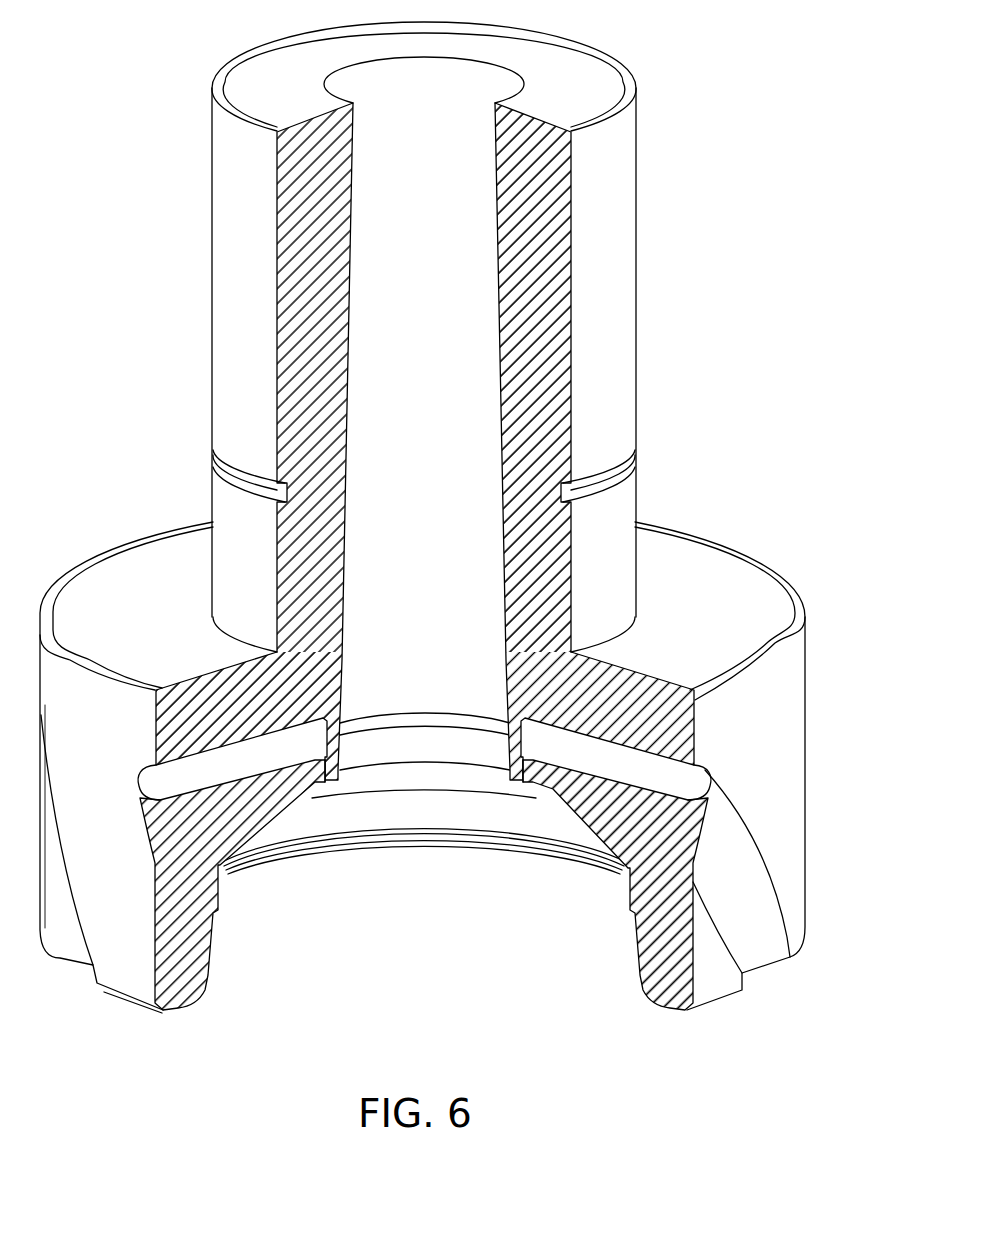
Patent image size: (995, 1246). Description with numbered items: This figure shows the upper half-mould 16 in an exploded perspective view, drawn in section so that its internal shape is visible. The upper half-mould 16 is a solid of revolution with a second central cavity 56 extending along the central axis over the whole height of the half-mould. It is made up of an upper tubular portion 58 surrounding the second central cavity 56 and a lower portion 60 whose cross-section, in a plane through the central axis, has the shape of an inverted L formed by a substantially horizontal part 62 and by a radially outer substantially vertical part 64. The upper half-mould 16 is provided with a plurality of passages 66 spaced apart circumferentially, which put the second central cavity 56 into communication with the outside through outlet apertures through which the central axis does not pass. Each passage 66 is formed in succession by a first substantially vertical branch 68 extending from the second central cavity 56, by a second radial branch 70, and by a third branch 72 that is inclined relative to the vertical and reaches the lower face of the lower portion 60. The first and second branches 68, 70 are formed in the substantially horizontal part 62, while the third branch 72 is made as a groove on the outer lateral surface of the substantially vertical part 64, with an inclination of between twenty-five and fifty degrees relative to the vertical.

The upper half-mould 16 is at (640, 175).
The second central cavity 56 is at (411, 484).
The upper tubular portion 58 is at (620, 328).
The lower portion 60 is at (721, 540).
The substantially horizontal part 62 is at (197, 687).
The radially outer substantially vertical part 64 is at (193, 938).
The passage 66 is at (707, 760).
The first substantially vertical branch 68 is at (533, 783).
The second radial branch 70 is at (283, 777).
The third branch 72 is at (785, 915).